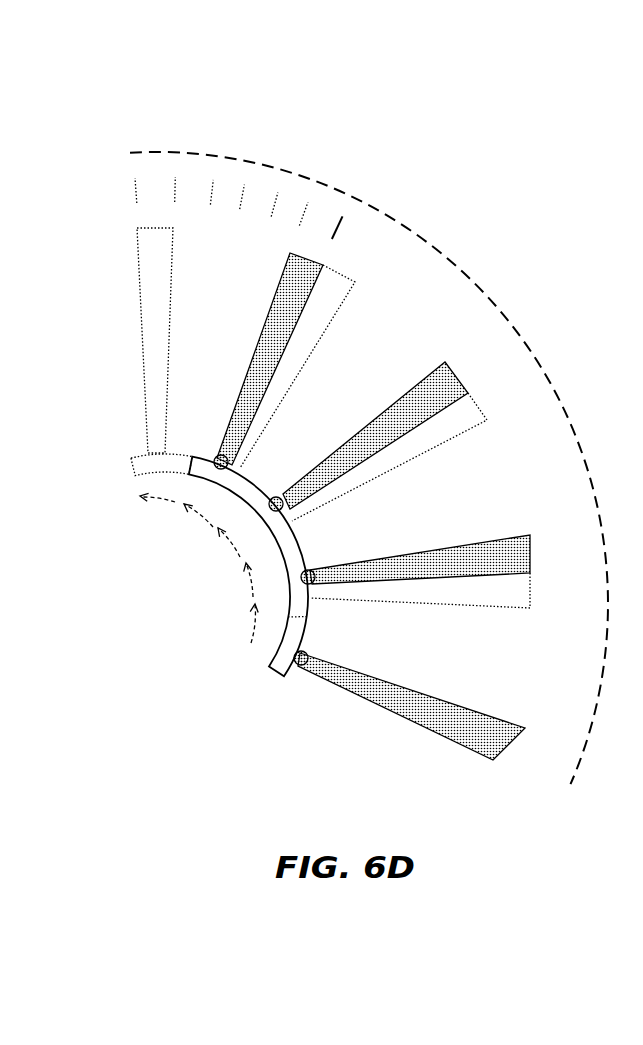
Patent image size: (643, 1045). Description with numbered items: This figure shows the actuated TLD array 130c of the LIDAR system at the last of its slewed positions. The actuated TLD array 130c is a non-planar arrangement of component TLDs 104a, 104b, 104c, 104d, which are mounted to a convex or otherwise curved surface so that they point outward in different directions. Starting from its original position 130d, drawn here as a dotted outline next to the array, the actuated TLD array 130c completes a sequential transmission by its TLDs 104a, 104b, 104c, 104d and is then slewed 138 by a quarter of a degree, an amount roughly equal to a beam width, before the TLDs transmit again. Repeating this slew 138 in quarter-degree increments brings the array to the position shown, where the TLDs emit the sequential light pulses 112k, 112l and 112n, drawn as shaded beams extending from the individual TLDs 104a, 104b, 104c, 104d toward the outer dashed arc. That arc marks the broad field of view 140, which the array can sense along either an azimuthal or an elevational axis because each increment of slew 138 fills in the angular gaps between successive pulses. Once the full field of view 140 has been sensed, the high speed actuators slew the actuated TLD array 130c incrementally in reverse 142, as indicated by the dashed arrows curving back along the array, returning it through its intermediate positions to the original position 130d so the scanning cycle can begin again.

The actuated TLD array 130c is at (128, 128).
The original position of the actuated TLD array 130d is at (130, 455).
The field of view 140 is at (482, 292).
The slew 138 is at (336, 228).
The TLD 104a is at (214, 458).
The TLD 104b is at (276, 500).
The TLD 104c is at (310, 571).
The TLD 104d is at (303, 652).
The light pulse 112k is at (255, 352).
The light pulse 112l is at (423, 395).
The light pulse 112n is at (443, 700).
The reverse slew 142 is at (209, 566).